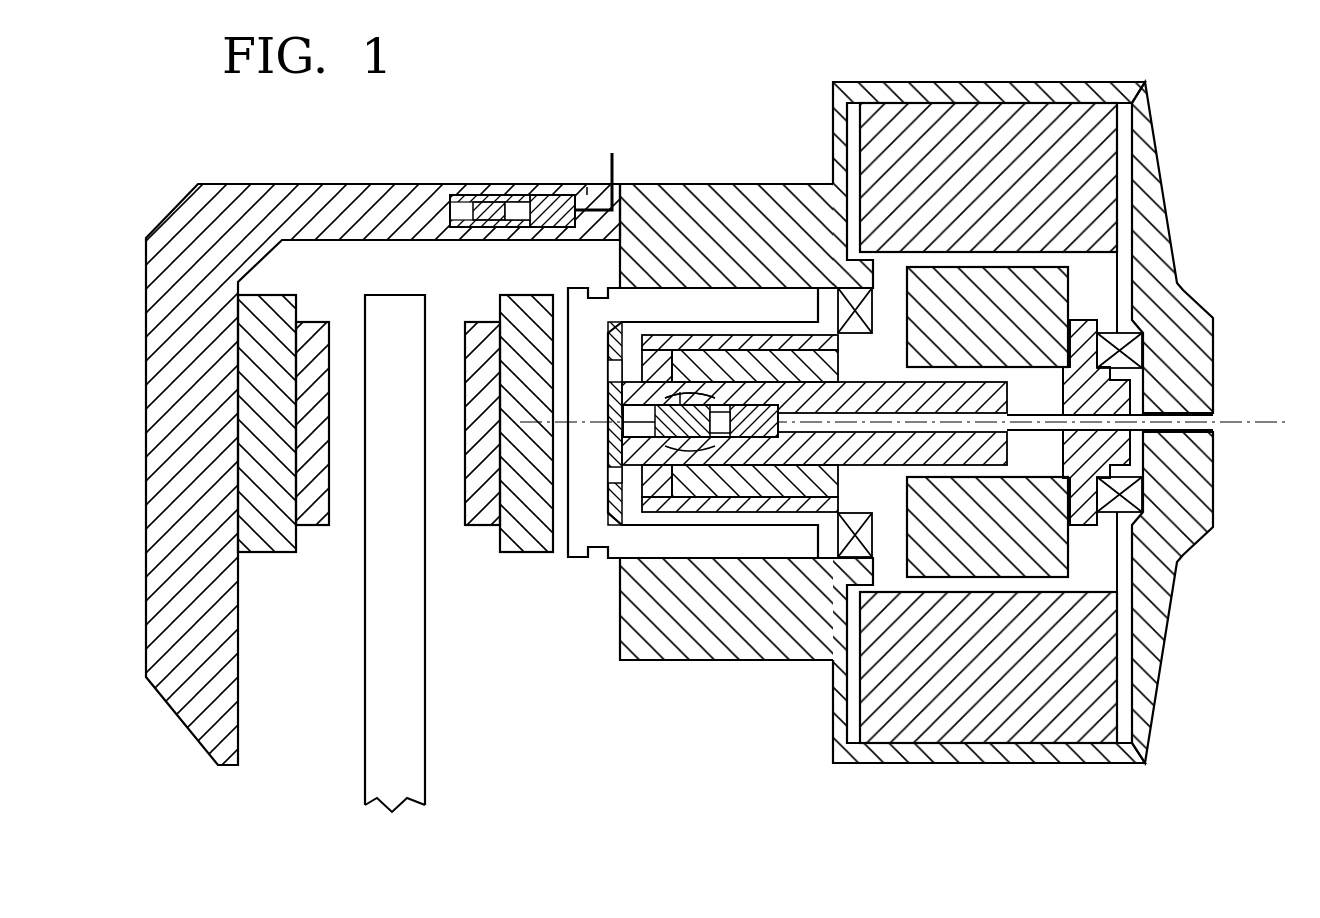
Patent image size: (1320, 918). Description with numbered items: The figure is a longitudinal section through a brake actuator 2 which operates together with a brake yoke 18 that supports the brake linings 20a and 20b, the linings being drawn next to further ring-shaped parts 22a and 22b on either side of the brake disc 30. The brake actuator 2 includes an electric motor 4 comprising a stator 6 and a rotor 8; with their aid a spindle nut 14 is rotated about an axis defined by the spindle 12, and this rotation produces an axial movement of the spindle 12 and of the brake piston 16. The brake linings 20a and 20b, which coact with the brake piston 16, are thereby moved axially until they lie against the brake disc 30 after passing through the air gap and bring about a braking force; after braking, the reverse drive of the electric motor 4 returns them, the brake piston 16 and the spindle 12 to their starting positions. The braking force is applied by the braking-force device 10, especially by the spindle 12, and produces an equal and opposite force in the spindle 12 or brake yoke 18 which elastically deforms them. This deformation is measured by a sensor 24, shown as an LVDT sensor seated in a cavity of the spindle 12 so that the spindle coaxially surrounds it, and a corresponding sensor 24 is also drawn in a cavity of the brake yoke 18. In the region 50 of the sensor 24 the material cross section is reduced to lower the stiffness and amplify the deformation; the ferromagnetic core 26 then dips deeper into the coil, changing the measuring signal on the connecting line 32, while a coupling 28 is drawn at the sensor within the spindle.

The brake actuator 2 is at (1017, 755).
The electric motor 4 is at (1100, 692).
The stator 6 is at (1053, 720).
The rotor 8 is at (1025, 322).
The braking-force device 10 is at (862, 398).
The spindle 12 is at (670, 455).
The spindle nut 14 is at (745, 362).
The brake piston 16 is at (573, 550).
The brake yoke 18 is at (197, 248).
The brake lining 20a is at (317, 517).
The brake lining 20b is at (482, 495).
The first support ring 22a is at (270, 533).
The second support ring 22b is at (527, 543).
The sensor 24 is at (550, 208).
The ferromagnetic core 26 is at (493, 210).
The coupling 28 is at (668, 398).
The brake disc 30 is at (410, 723).
The connecting line 32 is at (614, 168).
The region of the sensor 50 is at (587, 187).